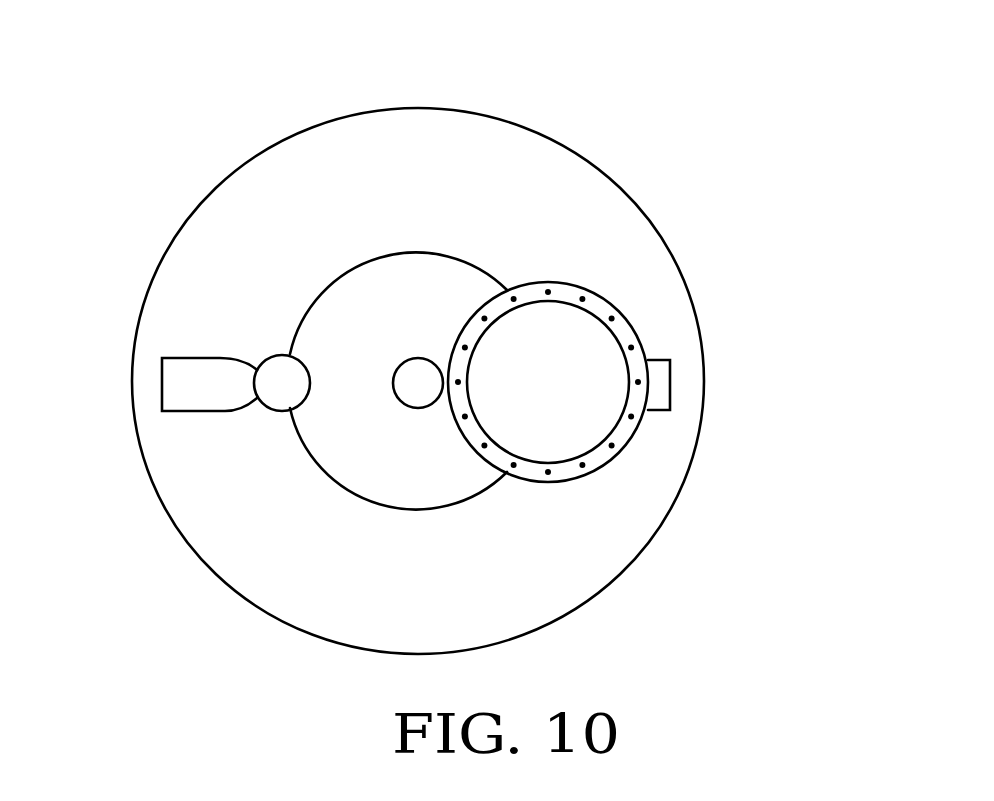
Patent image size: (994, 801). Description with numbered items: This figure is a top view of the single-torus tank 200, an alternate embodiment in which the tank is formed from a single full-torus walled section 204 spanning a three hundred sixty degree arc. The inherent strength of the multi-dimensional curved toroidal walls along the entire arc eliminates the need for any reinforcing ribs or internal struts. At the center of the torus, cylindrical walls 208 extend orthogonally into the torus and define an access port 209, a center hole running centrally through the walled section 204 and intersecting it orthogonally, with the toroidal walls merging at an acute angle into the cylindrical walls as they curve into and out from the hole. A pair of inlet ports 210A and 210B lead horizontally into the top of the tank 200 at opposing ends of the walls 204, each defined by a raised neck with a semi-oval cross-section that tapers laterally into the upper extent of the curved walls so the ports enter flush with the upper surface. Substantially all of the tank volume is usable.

The single-torus tank 200 is at (243, 100).
The full-torus walled section 204 is at (605, 170).
The cylindrical walls 208 is at (643, 322).
The access port 209 is at (548, 382).
The inlet port 210A is at (160, 357).
The inlet port 210B is at (665, 358).